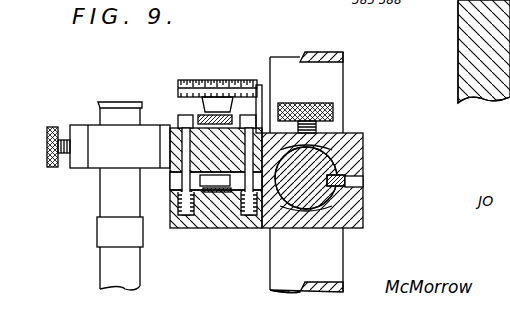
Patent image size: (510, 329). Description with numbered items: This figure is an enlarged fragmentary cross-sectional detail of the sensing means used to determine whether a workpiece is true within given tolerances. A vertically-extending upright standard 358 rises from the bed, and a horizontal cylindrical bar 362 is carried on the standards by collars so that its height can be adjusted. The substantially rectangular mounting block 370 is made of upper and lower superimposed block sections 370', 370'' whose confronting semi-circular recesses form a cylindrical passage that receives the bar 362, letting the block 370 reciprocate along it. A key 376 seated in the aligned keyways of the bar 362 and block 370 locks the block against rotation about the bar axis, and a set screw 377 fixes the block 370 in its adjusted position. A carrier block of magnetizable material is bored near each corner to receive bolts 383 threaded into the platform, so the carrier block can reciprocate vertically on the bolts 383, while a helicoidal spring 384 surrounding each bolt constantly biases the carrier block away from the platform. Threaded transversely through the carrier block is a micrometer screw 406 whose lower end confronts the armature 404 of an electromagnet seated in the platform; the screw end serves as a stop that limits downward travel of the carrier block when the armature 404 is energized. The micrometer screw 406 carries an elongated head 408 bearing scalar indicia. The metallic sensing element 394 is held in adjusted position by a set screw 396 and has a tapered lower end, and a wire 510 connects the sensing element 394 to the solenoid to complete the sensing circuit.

The wire 510 is at (132, 100).
The sensing element 394 is at (118, 106).
The set screw 396 is at (52, 168).
The bolts 383 is at (252, 118).
The micrometer screw 406 is at (204, 98).
The head 408 is at (225, 82).
The upright standard 358 is at (340, 74).
The set screw 377 is at (337, 112).
The upper block section 370' is at (347, 143).
The key 376 is at (352, 168).
The mounting block 370 is at (343, 178).
The lower block section 370'' is at (348, 201).
The cylindrical bar 362 is at (315, 226).
The armature 404 is at (223, 192).
The helicoidal spring 384 is at (172, 205).